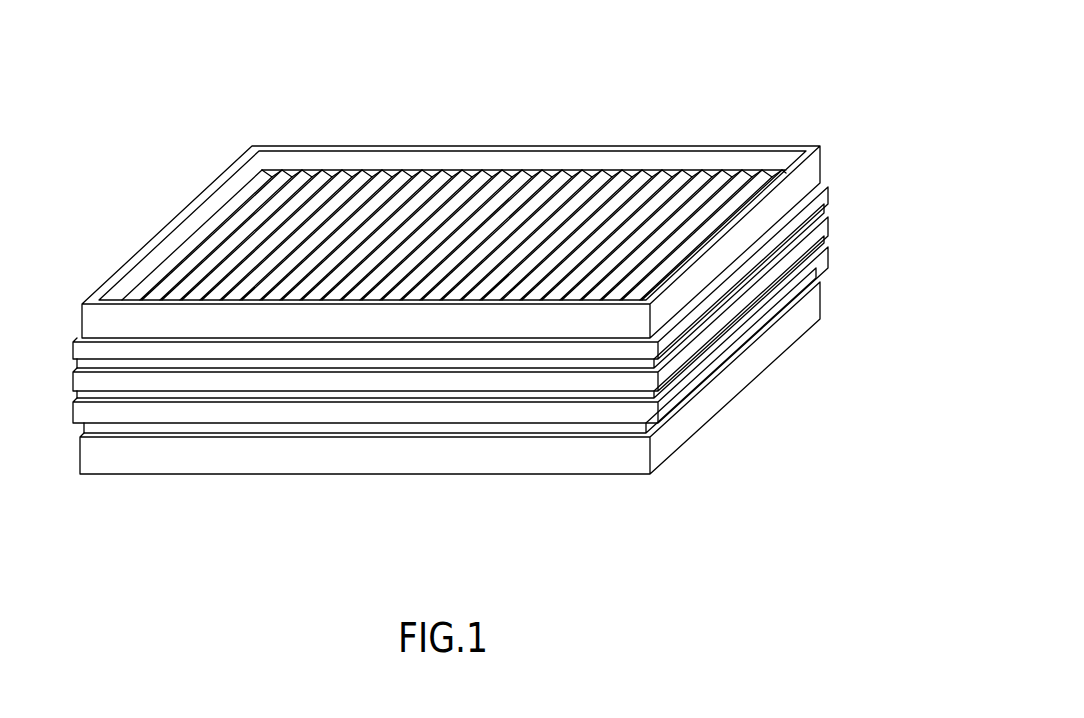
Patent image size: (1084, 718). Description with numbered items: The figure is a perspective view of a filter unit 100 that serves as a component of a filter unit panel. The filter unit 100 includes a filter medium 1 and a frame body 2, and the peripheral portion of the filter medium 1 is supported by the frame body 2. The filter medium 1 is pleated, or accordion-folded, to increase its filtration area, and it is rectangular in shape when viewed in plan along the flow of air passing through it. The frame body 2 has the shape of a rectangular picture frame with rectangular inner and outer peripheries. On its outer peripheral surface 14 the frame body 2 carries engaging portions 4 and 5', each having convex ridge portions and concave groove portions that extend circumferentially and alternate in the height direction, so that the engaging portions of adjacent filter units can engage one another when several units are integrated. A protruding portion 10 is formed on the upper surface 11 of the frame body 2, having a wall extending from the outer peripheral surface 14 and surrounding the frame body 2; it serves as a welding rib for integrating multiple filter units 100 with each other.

The filter unit 100 is at (320, 30).
The filter medium 1 is at (377, 208).
The upper surface 11 is at (583, 163).
The protruding portion 10 is at (813, 143).
The frame body 2 is at (868, 178).
The engaging portion 4 is at (794, 267).
The engaging portion 5' is at (450, 384).
The outer peripheral surface 14 is at (672, 438).